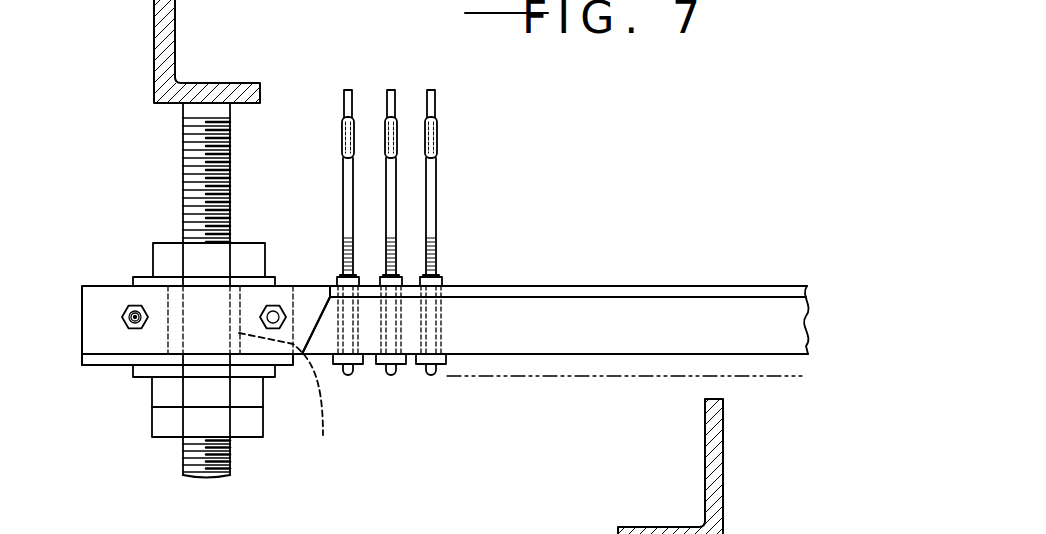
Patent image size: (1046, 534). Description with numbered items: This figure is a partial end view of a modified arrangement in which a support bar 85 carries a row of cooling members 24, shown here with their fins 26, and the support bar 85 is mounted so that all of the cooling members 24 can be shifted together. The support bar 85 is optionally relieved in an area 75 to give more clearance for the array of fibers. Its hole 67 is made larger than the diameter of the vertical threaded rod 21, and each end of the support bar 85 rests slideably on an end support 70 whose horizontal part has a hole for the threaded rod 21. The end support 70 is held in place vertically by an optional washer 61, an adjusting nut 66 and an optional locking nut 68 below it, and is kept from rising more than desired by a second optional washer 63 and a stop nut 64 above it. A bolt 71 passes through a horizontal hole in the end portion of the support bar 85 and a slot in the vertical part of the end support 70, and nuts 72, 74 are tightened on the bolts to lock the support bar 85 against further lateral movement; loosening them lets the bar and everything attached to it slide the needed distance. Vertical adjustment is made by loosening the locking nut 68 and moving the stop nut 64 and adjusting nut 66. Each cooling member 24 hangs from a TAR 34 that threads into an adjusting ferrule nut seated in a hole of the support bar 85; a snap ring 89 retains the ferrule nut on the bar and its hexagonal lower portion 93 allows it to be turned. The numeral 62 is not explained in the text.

The threaded rod 21 is at (188, 465).
The cooling member 24 is at (343, 135).
The fin 26 is at (391, 90).
The TAR 34 is at (350, 369).
The washer 61 is at (138, 372).
The bolt 62 is at (133, 318).
The second washer 63 is at (143, 277).
The stop nut 64 is at (167, 250).
The nut 66 is at (160, 393).
The hole 67 is at (290, 398).
The locking nut 68 is at (247, 430).
The end support 70 is at (88, 307).
The bolt 71 is at (287, 366).
The nut 72 is at (280, 300).
The nut 74 is at (130, 305).
The relieved area 75 is at (613, 332).
The support bar 85 is at (317, 285).
The snap ring 89 is at (440, 284).
The lower portion 93 is at (443, 360).